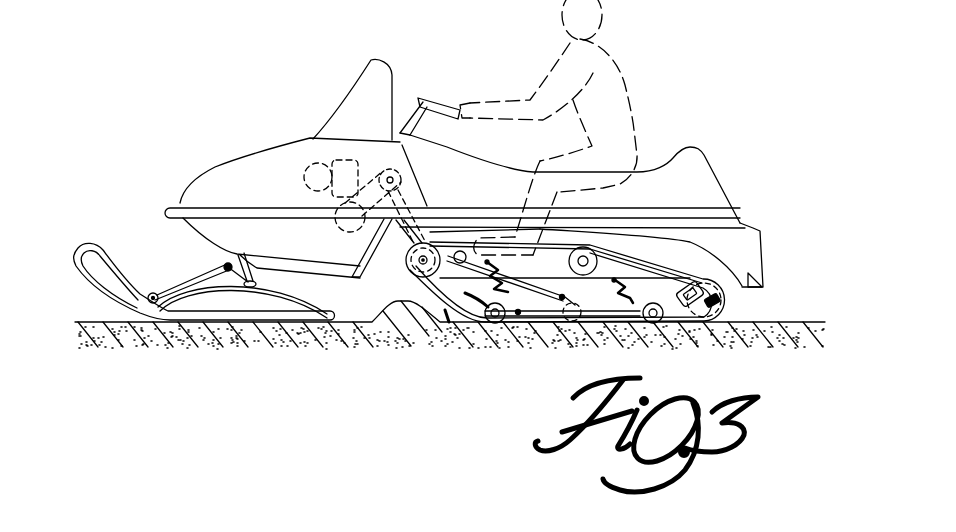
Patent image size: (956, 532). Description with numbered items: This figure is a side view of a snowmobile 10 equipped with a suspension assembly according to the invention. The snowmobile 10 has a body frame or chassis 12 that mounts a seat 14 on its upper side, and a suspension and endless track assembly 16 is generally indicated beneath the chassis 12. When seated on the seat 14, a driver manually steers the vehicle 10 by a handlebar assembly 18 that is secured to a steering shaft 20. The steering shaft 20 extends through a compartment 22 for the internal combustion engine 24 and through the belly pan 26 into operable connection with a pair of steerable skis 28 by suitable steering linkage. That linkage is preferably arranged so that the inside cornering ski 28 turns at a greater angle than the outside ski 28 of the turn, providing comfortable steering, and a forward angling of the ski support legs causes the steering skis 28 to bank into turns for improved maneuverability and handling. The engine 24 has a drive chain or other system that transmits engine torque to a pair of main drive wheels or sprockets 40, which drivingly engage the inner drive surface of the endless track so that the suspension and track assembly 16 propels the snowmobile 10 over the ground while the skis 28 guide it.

The snowmobile 10 is at (225, 151).
The body frame or chassis 12 is at (753, 225).
The seat 14 is at (700, 147).
The suspension and endless track assembly 16 is at (447, 324).
The handlebar assembly 18 is at (453, 100).
The steering shaft 20 is at (410, 100).
The compartment 22 is at (275, 148).
The internal combustion engine 24 is at (306, 194).
The belly pan 26 is at (359, 279).
The steerable skis 28 is at (101, 247).
The main drive wheels or sprockets 40 is at (398, 257).